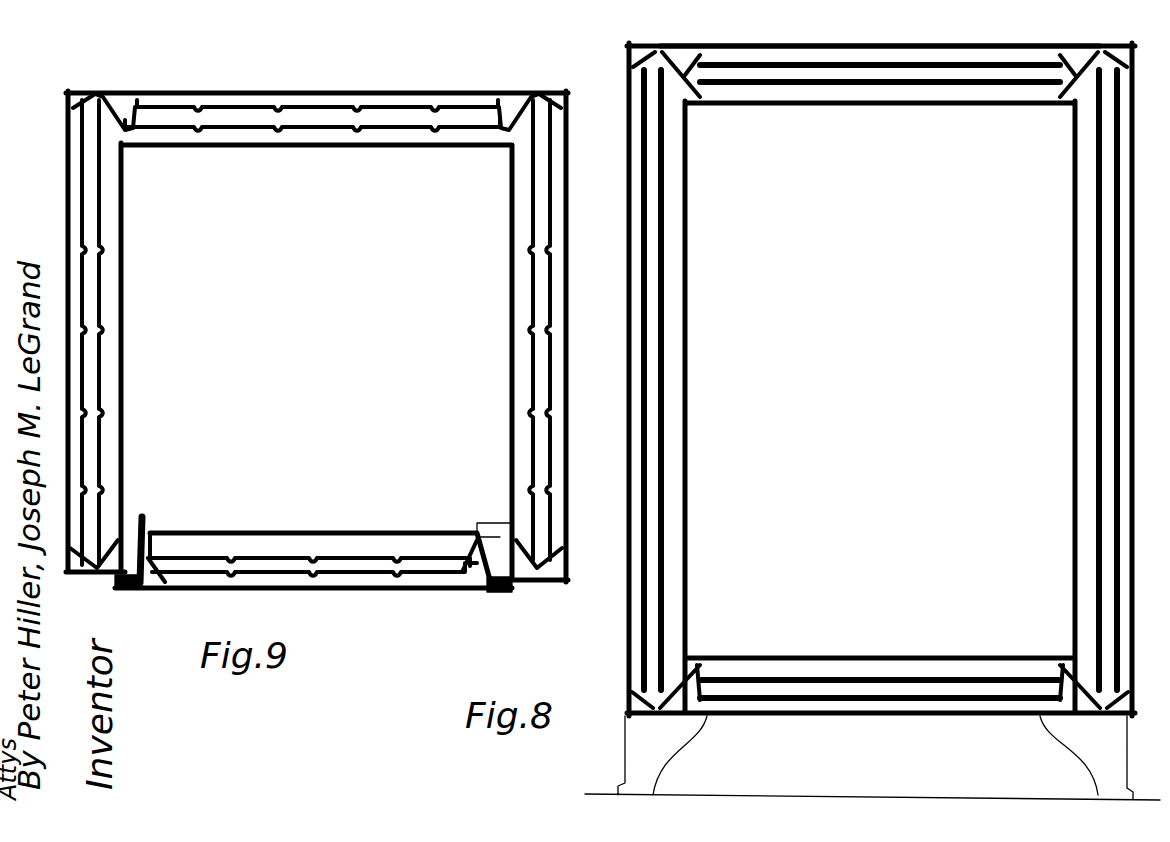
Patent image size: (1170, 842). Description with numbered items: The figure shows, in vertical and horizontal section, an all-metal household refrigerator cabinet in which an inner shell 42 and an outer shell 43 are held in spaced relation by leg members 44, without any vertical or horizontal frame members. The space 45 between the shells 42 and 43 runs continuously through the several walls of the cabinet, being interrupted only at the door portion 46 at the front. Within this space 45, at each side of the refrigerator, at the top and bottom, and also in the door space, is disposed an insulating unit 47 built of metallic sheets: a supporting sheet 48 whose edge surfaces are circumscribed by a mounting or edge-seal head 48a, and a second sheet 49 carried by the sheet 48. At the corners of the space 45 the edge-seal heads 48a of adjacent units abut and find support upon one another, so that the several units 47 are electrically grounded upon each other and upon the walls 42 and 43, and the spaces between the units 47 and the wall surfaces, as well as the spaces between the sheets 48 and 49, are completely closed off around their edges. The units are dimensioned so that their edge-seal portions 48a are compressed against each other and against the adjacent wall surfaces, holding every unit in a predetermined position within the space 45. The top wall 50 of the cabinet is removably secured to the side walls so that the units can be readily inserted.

In FIG. 9, the inner shell 42 is at (298, 148).
In FIG. 8, the inner shell 42 is at (1072, 246).
In FIG. 9, the outer shell 43 is at (318, 91).
In FIG. 8, the outer shell 43 is at (1135, 272).
In FIG. 8, the leg members 44 is at (690, 670).
In FIG. 9, the space 45 is at (415, 133).
In FIG. 8, the space 45 is at (672, 315).
In FIG. 9, the door portion 46 is at (349, 535).
In FIG. 9, the insulating unit 47 is at (247, 129).
In FIG. 8, the insulating unit 47 is at (890, 86).
In FIG. 9, the supporting sheet 48 is at (187, 102).
In FIG. 8, the supporting sheet 48 is at (960, 64).
In FIG. 9, the edge seal head 48a is at (118, 100).
In FIG. 9, the second sheet 49 is at (178, 123).
In FIG. 8, the second sheet 49 is at (748, 85).
In FIG. 8, the top wall 50 is at (800, 46).